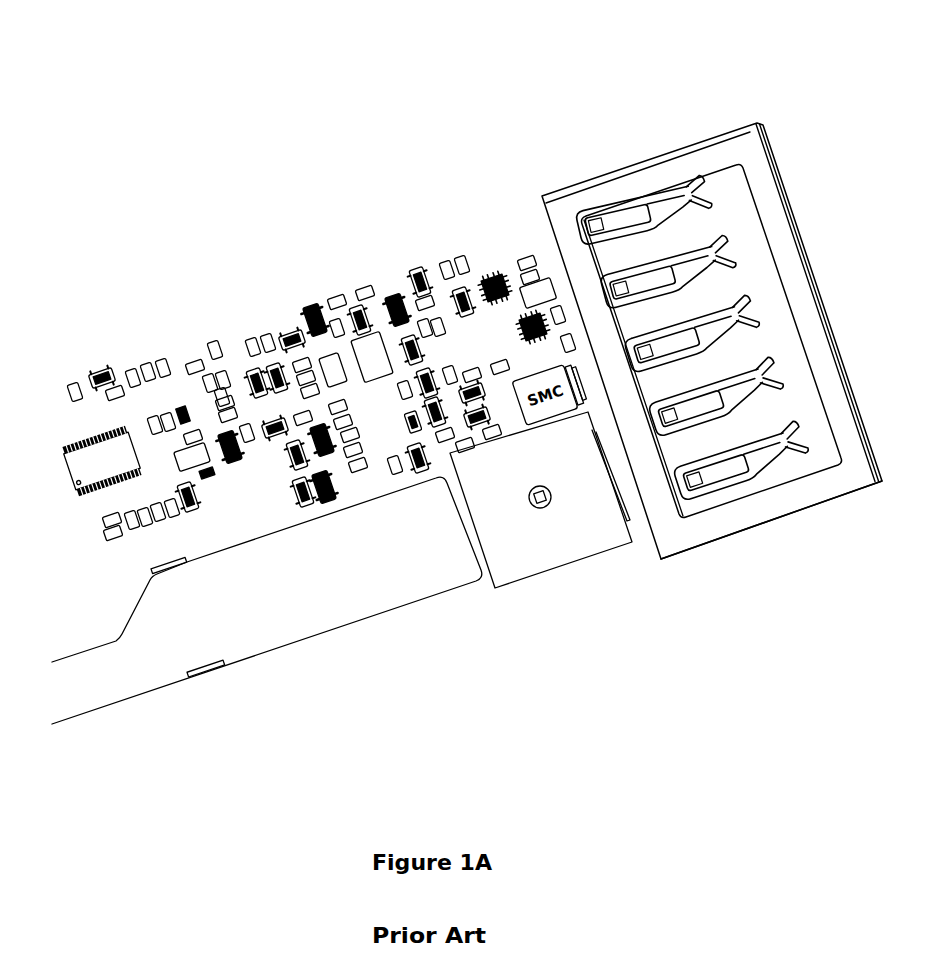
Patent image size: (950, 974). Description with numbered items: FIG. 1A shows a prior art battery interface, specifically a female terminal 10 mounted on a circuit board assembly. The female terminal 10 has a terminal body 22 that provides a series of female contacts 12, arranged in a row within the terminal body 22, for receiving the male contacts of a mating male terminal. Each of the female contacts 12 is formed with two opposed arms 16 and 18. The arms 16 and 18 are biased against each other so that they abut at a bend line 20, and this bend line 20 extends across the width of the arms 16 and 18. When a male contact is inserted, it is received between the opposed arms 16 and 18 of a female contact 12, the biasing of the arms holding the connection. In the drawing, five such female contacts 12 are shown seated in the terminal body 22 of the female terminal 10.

The female terminal 10 is at (675, 116).
The female contacts 12 is at (617, 134).
The arm 16 is at (612, 210).
The arm 18 is at (710, 214).
The bend line 20 is at (700, 217).
The terminal body 22 is at (668, 547).